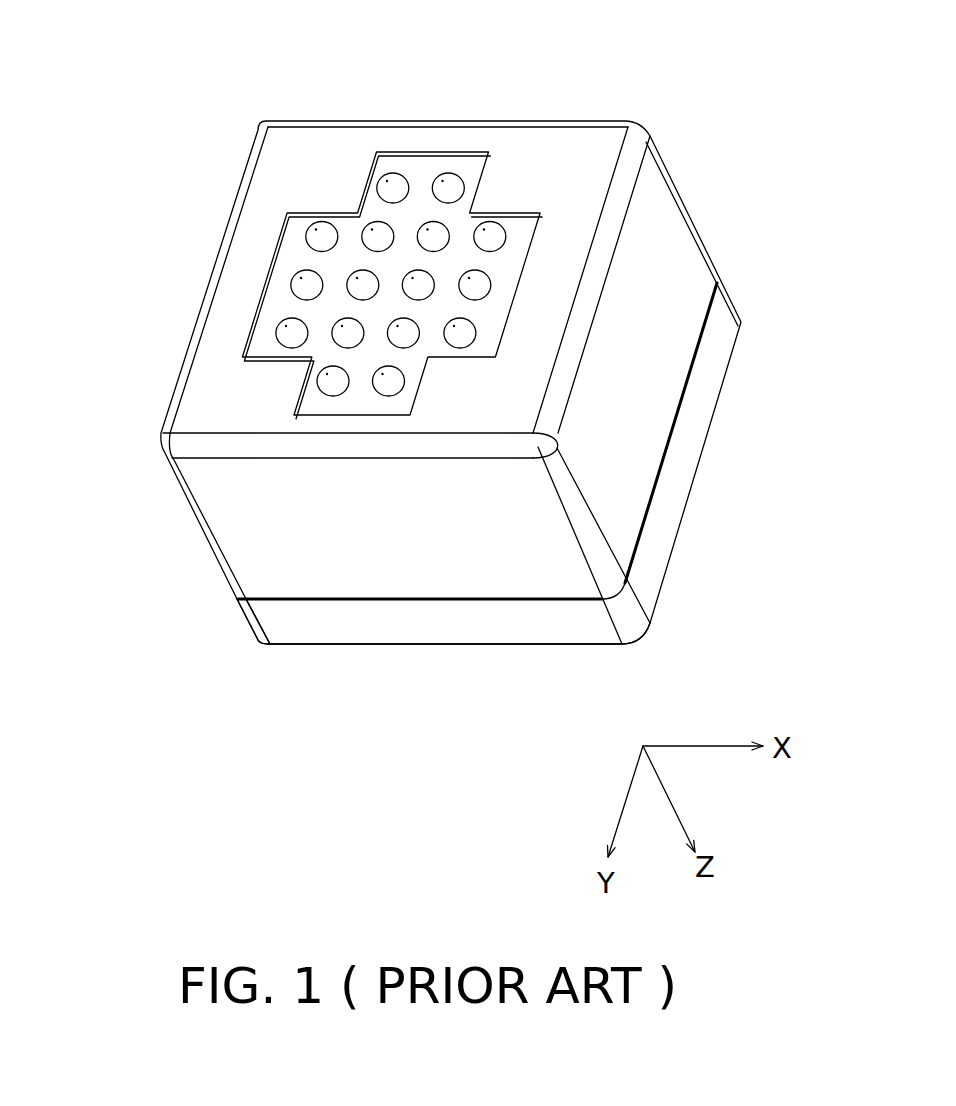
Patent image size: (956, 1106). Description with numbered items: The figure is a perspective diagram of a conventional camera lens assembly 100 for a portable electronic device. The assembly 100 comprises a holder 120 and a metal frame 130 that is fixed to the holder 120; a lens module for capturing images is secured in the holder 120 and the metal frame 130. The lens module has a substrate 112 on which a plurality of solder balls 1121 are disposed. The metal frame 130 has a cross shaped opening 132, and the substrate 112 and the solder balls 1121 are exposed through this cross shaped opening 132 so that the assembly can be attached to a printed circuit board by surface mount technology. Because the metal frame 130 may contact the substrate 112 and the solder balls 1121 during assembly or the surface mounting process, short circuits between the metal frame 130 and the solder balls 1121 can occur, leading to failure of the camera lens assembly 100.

The camera lens assembly 100 is at (250, 110).
The substrate 112 is at (380, 217).
The solder balls 1121 is at (285, 335).
The holder 120 is at (248, 630).
The metal frame 130 is at (683, 200).
The cross shaped opening 132 is at (390, 155).